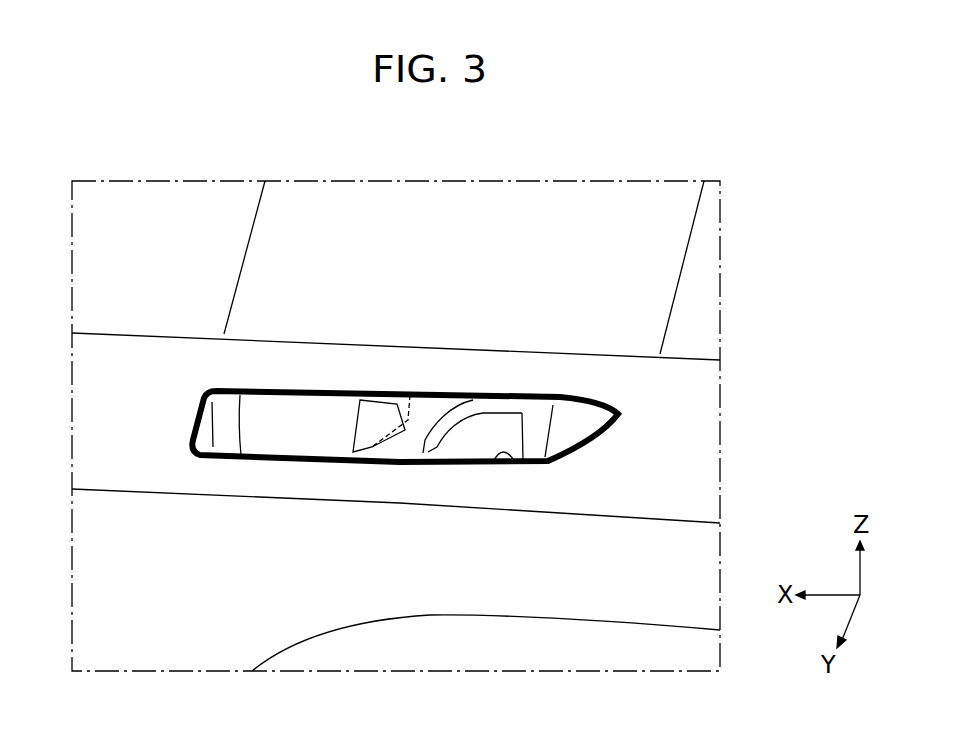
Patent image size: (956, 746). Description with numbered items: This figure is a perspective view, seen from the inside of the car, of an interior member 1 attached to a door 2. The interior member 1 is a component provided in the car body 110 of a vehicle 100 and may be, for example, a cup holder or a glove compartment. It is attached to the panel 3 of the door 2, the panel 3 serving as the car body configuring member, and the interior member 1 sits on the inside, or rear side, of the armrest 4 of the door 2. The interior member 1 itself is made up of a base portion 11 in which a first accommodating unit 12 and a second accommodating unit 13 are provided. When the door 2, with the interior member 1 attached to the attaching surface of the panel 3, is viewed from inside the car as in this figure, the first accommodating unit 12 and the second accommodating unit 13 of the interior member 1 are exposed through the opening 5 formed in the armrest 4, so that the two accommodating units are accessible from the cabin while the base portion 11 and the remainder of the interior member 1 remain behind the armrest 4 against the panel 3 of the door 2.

The interior member 1 is at (412, 382).
The door 2 is at (615, 377).
The panel 3 is at (623, 458).
The armrest 4 is at (647, 420).
The opening 5 is at (517, 460).
The base portion 11 is at (435, 397).
The first accommodating unit 12 is at (313, 408).
The second accommodating unit 13 is at (492, 420).
The vehicle 100 is at (597, 165).
The car body 110 is at (671, 165).